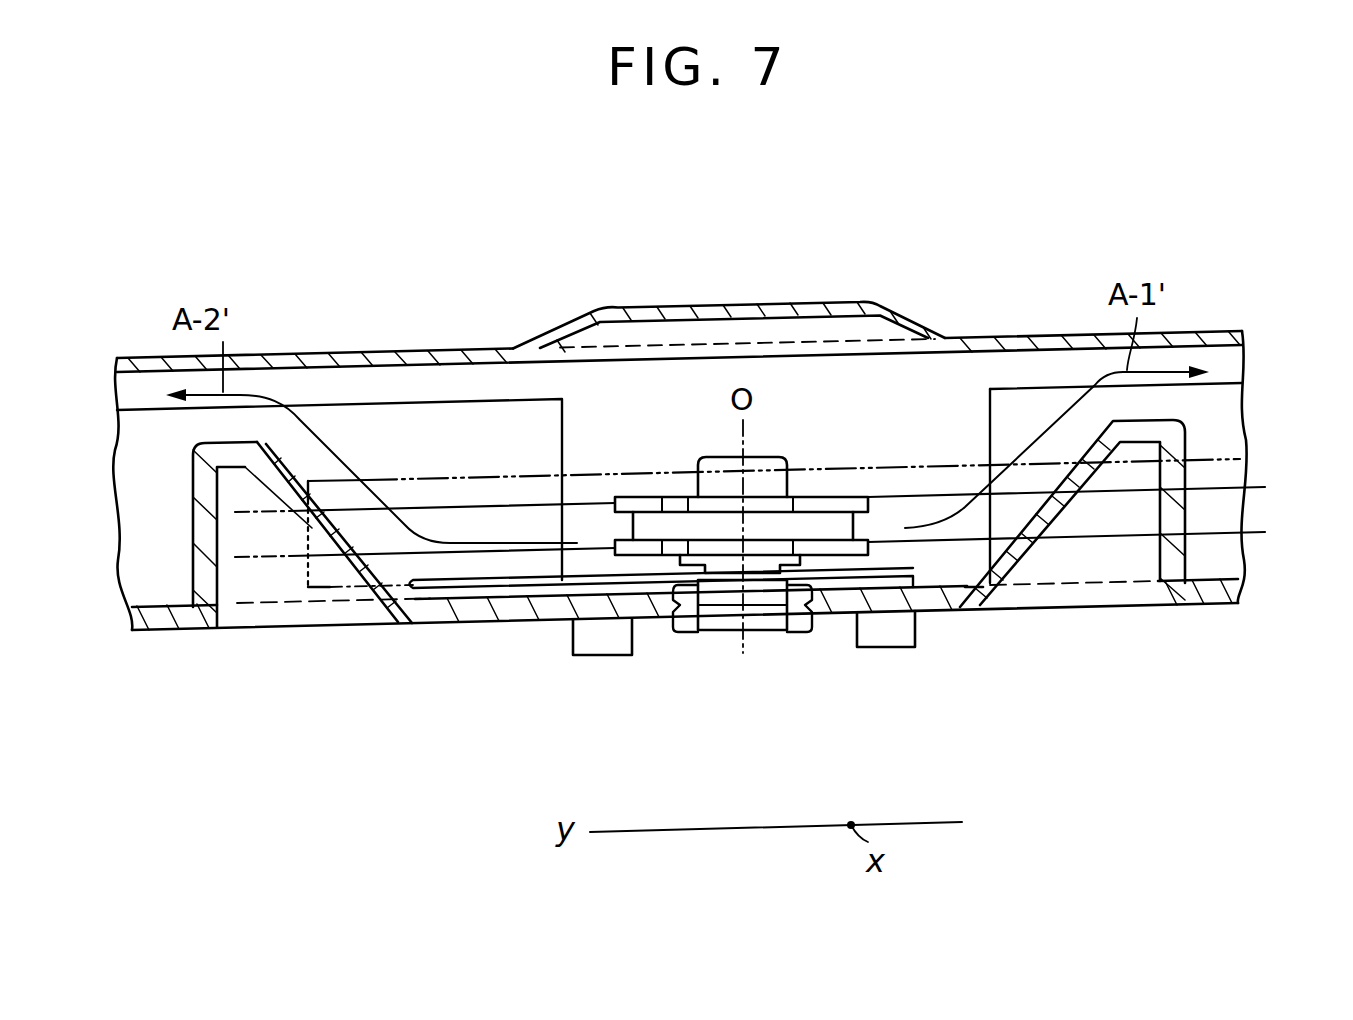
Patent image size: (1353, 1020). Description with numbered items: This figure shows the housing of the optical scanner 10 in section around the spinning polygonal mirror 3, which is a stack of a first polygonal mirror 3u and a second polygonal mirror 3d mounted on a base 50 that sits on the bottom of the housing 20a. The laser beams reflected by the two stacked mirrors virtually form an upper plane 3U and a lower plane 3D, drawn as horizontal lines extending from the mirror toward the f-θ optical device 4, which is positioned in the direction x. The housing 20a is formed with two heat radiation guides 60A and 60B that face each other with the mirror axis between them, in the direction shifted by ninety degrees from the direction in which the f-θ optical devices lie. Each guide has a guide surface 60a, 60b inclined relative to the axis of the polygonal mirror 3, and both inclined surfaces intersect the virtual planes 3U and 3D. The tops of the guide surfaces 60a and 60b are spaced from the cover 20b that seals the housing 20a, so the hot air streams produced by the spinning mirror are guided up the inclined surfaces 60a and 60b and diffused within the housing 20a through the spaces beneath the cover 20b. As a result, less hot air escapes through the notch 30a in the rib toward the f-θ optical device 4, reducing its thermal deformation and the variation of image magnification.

The optical scanner 10 is at (985, 196).
The polygonal mirror 3 is at (613, 238).
The first polygonal mirror 3u is at (678, 497).
The second polygonal mirror 3d is at (662, 540).
The virtual plane 3U is at (427, 507).
The virtual plane 3D is at (443, 556).
The f-θ optical device 4 is at (522, 475).
The base 50 is at (527, 602).
The housing 20a is at (1192, 593).
The cover 20b is at (1190, 340).
The notch 30a is at (980, 408).
The heat radiation guide 60A is at (1092, 478).
The guide surface 60a is at (1087, 440).
The heat radiation guide 60B is at (273, 487).
The guide surface 60b is at (290, 460).